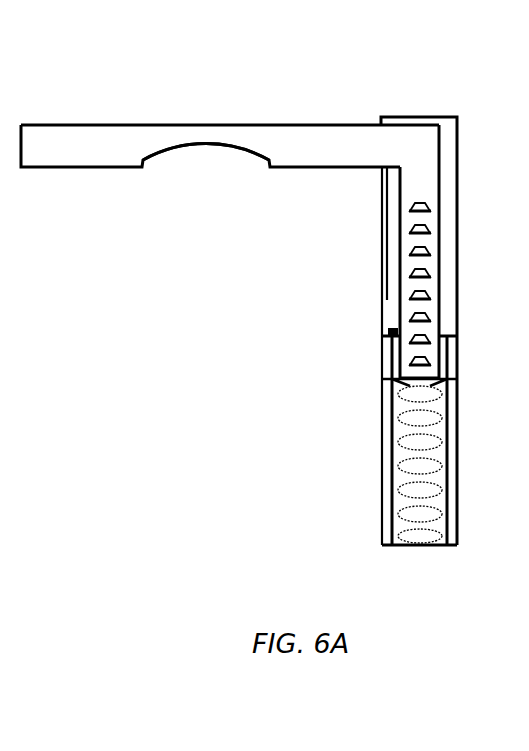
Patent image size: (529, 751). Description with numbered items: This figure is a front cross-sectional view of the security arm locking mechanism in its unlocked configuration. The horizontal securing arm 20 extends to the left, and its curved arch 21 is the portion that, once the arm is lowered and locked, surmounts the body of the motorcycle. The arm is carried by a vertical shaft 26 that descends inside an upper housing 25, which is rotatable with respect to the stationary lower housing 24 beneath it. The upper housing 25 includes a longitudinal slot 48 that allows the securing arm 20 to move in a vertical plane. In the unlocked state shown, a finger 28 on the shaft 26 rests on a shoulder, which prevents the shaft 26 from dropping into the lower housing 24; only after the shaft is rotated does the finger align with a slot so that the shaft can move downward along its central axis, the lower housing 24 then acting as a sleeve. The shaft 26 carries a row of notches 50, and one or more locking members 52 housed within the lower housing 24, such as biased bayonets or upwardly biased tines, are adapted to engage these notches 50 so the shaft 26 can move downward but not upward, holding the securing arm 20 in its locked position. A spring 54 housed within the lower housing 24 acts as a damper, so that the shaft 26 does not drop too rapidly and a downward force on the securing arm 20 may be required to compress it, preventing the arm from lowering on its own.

The securing arm 20 is at (113, 125).
The arch 21 is at (205, 145).
The lower housing 24 is at (458, 358).
The upper housing 25 is at (458, 167).
The shaft 26 is at (440, 247).
The finger 28 is at (393, 331).
The longitudinal slot 48 is at (385, 262).
The notches 50 is at (411, 207).
The locking members 52 is at (384, 391).
The spring 54 is at (415, 528).